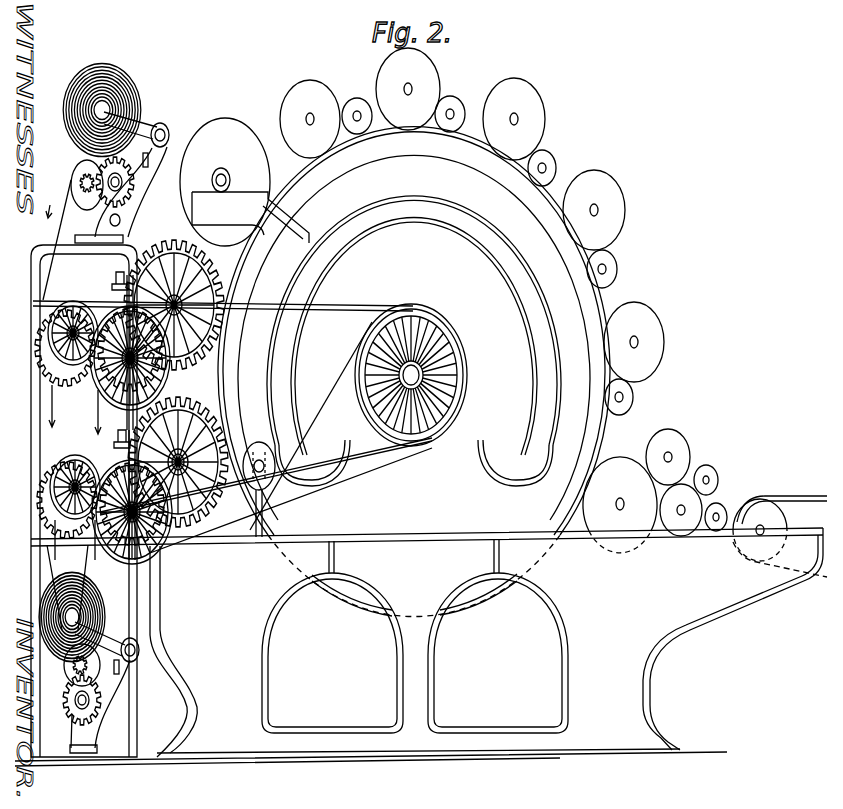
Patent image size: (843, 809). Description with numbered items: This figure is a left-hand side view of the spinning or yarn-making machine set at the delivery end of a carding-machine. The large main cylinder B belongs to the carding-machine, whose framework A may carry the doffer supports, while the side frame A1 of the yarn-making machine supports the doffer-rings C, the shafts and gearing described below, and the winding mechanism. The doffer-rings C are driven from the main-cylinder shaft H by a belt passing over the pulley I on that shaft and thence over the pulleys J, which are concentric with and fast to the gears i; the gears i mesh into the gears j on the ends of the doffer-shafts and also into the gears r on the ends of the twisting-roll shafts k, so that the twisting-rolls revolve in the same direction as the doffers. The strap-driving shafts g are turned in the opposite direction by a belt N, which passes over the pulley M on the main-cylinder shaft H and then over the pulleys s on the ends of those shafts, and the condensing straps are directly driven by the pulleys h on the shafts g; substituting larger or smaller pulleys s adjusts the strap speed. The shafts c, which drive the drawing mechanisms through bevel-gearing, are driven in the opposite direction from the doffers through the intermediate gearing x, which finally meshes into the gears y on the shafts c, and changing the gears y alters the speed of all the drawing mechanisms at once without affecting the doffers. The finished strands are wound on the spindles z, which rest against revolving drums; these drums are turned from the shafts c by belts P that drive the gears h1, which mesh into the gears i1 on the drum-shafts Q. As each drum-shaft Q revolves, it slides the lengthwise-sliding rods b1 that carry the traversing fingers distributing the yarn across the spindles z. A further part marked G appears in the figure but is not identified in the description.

The main cylinder B is at (414, 372).
The belt N is at (414, 341).
The pulley M is at (447, 350).
The pulley I is at (458, 373).
The main-cylinder shaft H is at (411, 375).
The driving belt G is at (266, 437).
The framework of the carding-machine A is at (419, 647).
The side frame A1 is at (33, 286).
The belts P is at (60, 240).
The spindles z is at (104, 362).
The drum-shaft Q is at (127, 170).
The gears h1 is at (80, 183).
The pulleys h is at (82, 665).
The gears i1 is at (135, 185).
The lengthwise-sliding rods b1 is at (120, 220).
The doffer-rings C is at (172, 243).
The gears j is at (212, 468).
The gears i is at (162, 566).
The gears r is at (131, 427).
The pulleys s is at (50, 355).
The strap-driving shafts g is at (87, 317).
The twisting-roll shafts k is at (116, 280).
The intermediate gearing x is at (84, 378).
The gears y is at (92, 298).
The shafts c is at (50, 324).
The pulleys J is at (118, 568).